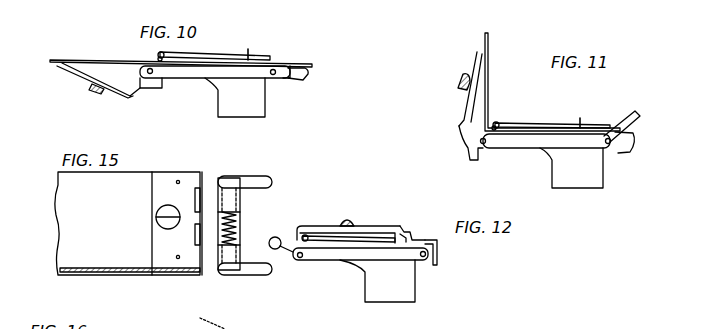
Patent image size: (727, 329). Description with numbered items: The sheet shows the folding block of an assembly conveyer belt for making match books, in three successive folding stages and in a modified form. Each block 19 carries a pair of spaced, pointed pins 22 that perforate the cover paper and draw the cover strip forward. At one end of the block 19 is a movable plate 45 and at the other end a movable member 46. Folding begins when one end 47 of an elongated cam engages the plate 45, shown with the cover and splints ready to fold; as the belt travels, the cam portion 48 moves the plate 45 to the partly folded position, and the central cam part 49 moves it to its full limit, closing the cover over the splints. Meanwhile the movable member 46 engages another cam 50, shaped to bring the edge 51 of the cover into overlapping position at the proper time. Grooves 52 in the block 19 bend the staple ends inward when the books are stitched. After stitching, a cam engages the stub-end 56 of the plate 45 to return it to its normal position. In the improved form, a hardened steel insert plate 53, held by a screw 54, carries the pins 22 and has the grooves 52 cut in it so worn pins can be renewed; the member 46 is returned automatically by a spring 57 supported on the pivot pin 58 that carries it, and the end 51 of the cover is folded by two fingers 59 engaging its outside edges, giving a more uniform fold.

In FIG. 10, the block 19 is at (180, 75).
In FIG. 11, the block 19 is at (510, 148).
In FIG. 12, the block 19 is at (325, 262).
In FIG. 10, the pins 22 is at (249, 54).
In FIG. 11, the pins 22 is at (580, 118).
In FIG. 12, the pins 22 is at (395, 238).
In FIG. 15, the pins 22 is at (178, 261).
In FIG. 10, the movable plate 45 is at (72, 75).
In FIG. 11, the movable plate 45 is at (470, 108).
In FIG. 12, the movable plate 45 is at (330, 228).
In FIG. 10, the movable member 46 is at (283, 80).
In FIG. 11, the movable member 46 is at (640, 118).
In FIG. 15, the movable member 46 is at (238, 200).
In FIG. 10, the end of elongated cam 47 is at (96, 91).
In FIG. 11, the portion of cam 48 is at (458, 84).
In FIG. 12, the central part of cam 49 is at (348, 218).
In FIG. 10, the cam 50 is at (306, 78).
In FIG. 11, the cam 50 is at (637, 142).
In FIG. 12, the cam 50 is at (439, 262).
In FIG. 10, the edge of cover 51 is at (296, 63).
In FIG. 11, the edge of cover 51 is at (626, 122).
In FIG. 12, the edge of cover 51 is at (402, 236).
In FIG. 15, the grooves 52 is at (195, 200).
In FIG. 15, the insert plate 53 is at (157, 273).
In FIG. 15, the screw 54 is at (155, 217).
In FIG. 11, the stub-end 56 is at (470, 153).
In FIG. 15, the spring 57 is at (238, 222).
In FIG. 15, the pivot pin 58 is at (235, 255).
In FIG. 15, the fingers 59 is at (268, 273).